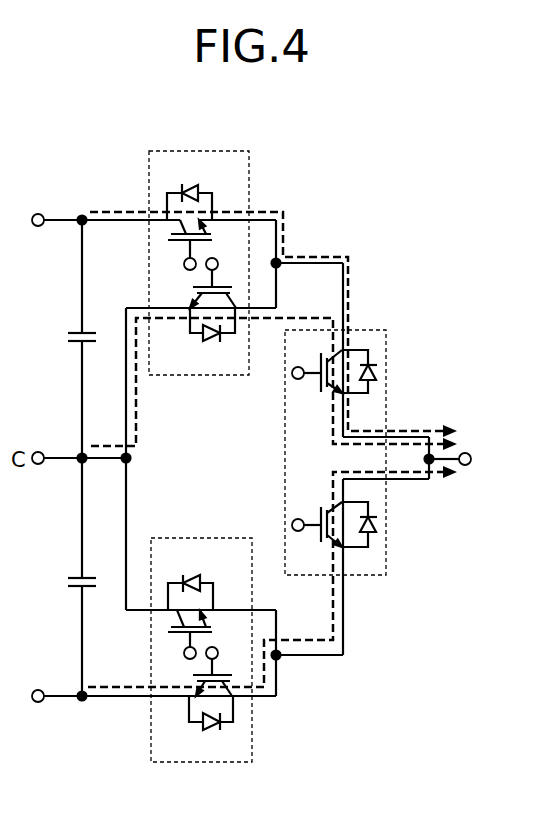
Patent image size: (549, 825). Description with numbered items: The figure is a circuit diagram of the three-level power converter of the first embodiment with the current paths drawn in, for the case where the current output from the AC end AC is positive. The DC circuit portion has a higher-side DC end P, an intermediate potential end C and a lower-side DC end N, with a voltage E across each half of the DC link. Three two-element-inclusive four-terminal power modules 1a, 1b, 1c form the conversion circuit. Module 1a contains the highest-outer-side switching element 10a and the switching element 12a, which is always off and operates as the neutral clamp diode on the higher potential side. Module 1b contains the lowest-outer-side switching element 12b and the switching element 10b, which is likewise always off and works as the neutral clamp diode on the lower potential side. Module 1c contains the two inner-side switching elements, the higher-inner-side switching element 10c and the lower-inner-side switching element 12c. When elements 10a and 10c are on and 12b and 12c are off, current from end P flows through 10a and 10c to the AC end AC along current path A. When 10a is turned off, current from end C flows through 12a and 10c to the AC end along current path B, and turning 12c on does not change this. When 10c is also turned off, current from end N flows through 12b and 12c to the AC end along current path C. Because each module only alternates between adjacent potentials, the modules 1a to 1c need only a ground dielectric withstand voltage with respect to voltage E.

The two-element-inclusive four-terminal power module 1a is at (203, 148).
The two-element-inclusive four-terminal power module 1b is at (201, 765).
The two-element-inclusive four-terminal power module 1c is at (370, 328).
The highest-outer-side switching element 10a is at (230, 208).
The switching element 10b is at (194, 553).
The higher-inner-side switching element 10c is at (375, 404).
The switching element 12a is at (193, 352).
The lowest-outer-side switching element 12b is at (236, 739).
The lower-inner-side switching element 12c is at (375, 557).
The current path A is at (122, 210).
The current path B is at (107, 443).
The current path C is at (108, 685).
The voltage E is at (71, 462).
The higher-side DC end P is at (95, 222).
The lower-side DC end N is at (142, 698).
The AC end AC is at (464, 461).